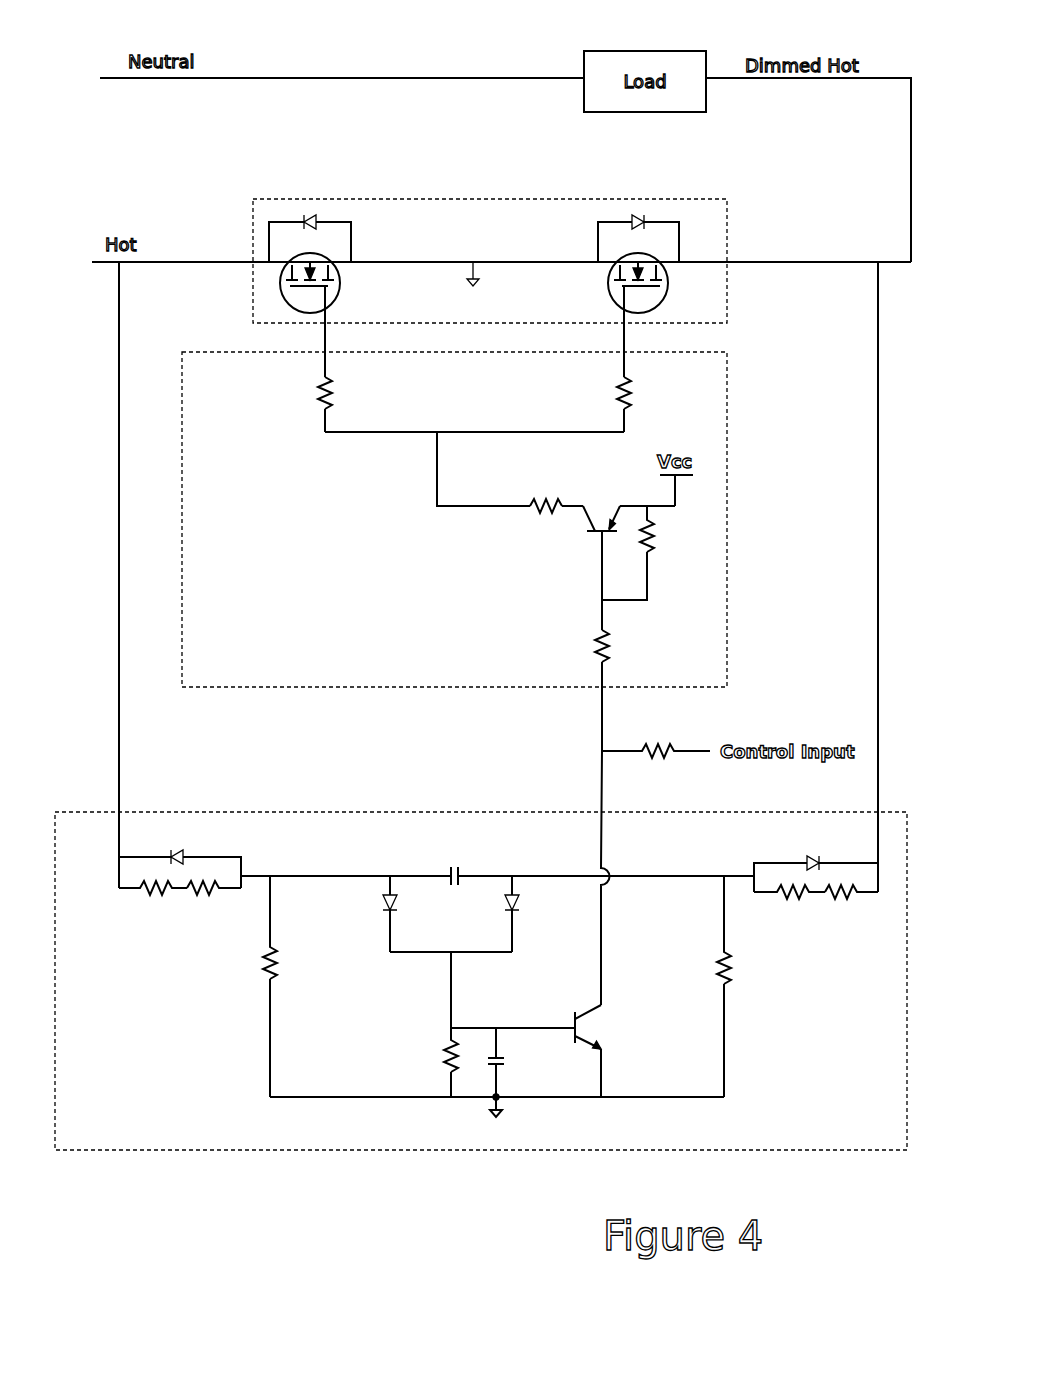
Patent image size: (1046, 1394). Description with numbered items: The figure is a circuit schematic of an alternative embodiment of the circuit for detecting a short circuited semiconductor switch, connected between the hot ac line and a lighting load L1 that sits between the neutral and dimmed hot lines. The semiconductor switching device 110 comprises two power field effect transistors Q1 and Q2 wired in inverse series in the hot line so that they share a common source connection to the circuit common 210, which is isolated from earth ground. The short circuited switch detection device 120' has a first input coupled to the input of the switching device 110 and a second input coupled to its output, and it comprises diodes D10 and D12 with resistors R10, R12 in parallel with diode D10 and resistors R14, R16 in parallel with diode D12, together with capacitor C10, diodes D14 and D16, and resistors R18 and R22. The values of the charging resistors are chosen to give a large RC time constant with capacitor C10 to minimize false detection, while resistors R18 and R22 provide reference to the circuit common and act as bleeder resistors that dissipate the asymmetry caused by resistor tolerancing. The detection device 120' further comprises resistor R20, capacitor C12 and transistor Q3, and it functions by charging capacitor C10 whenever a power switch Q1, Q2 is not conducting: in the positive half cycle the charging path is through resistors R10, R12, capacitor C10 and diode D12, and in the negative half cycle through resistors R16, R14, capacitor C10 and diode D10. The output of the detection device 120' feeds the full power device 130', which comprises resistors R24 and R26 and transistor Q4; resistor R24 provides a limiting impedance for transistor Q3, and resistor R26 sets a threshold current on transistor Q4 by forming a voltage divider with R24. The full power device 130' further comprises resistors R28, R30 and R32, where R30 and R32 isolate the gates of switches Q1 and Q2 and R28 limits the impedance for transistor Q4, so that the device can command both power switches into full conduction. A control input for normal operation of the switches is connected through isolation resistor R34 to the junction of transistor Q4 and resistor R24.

The load L1 is at (645, 51).
The semiconductor switching device 110 is at (300, 199).
The full power device 130' is at (436, 497).
The short circuited switch detection device 120' is at (470, 957).
The circuit common 210 is at (516, 278).
The power field effect transistor Q1 is at (321, 296).
The power field effect transistor Q2 is at (628, 296).
The transistor Q3 is at (606, 1051).
The transistor Q4 is at (629, 552).
The resistor R10 is at (153, 904).
The resistor R12 is at (214, 904).
The resistor R14 is at (789, 907).
The resistor R16 is at (851, 907).
The resistor R18 is at (247, 986).
The resistor R20 is at (426, 1062).
The resistor R22 is at (747, 986).
The resistor R24 is at (626, 690).
The resistor R26 is at (653, 553).
The resistor R28 is at (544, 524).
The resistor R30 is at (300, 404).
The resistor R32 is at (650, 404).
The isolation resistor R34 is at (656, 766).
The capacitor C10 is at (457, 860).
The capacitor C12 is at (521, 1072).
The diode D10 is at (180, 858).
The diode D12 is at (816, 859).
The diode D14 is at (363, 914).
The diode D16 is at (540, 914).